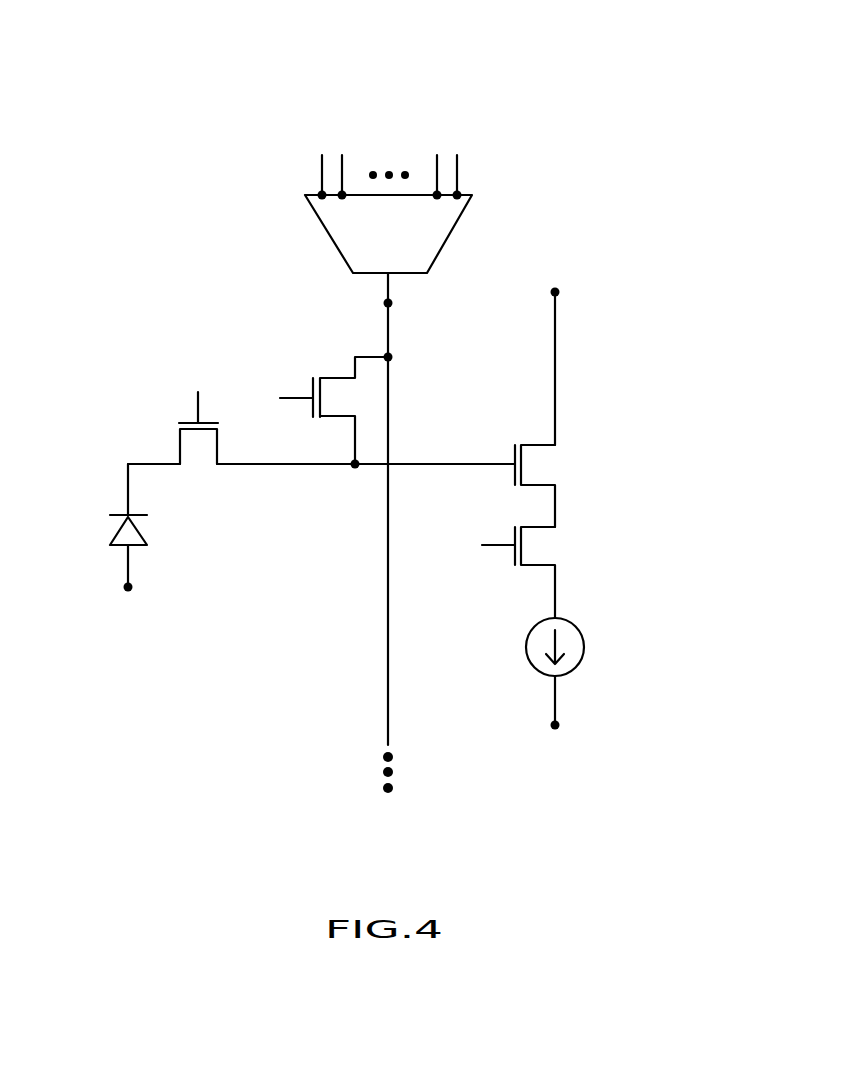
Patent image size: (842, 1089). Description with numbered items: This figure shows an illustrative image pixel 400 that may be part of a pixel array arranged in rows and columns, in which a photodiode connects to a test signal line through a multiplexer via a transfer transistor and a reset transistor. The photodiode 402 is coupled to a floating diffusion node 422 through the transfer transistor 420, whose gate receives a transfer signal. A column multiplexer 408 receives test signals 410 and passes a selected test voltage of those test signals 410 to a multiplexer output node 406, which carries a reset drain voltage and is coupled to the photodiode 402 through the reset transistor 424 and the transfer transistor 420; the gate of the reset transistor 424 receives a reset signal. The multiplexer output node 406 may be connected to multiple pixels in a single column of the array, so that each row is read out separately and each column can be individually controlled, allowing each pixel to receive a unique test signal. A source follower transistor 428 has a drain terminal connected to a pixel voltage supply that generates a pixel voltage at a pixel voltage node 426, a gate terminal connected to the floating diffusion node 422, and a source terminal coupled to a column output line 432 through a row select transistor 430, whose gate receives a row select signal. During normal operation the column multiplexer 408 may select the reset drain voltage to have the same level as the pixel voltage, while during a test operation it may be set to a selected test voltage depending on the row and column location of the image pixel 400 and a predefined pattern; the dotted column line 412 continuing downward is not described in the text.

The image pixel 400 is at (610, 144).
The photodiode 402 is at (118, 535).
The multiplexer output node 406 is at (389, 304).
The column multiplexer 408 is at (451, 232).
The test signals 410 is at (458, 172).
The column output line 412 is at (387, 718).
The transfer transistor 420 is at (178, 452).
The floating diffusion node 422 is at (351, 466).
The reset transistor 424 is at (345, 377).
The pixel voltage node 426 is at (559, 291).
The source follower transistor 428 is at (546, 445).
The row select transistor 430 is at (540, 567).
The column output line 432 is at (558, 597).